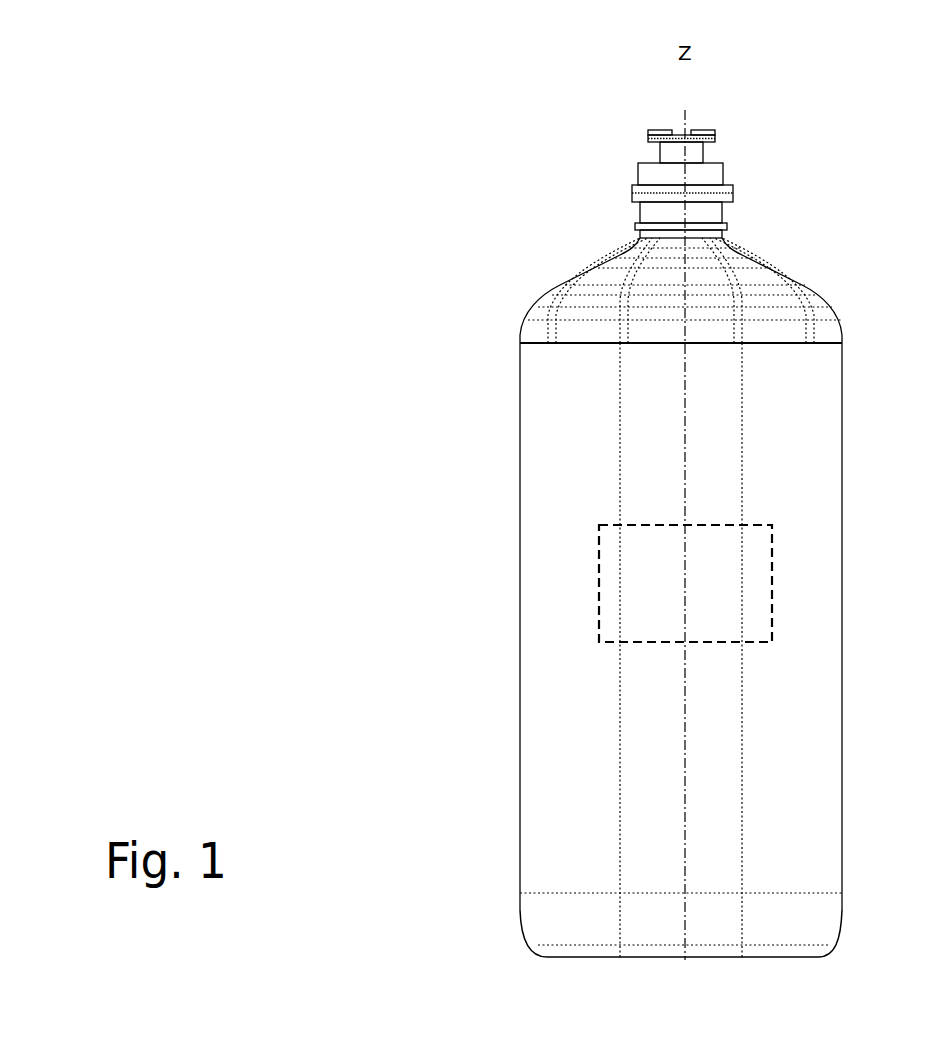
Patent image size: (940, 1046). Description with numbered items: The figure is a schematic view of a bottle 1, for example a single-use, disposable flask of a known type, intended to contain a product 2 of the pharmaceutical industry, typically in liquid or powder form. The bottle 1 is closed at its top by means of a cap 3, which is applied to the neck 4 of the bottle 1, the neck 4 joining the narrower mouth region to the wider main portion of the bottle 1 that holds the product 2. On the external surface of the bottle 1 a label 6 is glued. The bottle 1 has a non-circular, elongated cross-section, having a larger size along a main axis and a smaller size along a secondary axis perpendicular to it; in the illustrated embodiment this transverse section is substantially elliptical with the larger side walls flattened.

The bottle 1 is at (395, 198).
The product 2 is at (777, 483).
The cap 3 is at (717, 161).
The neck 4 is at (720, 253).
The label 6 is at (723, 590).